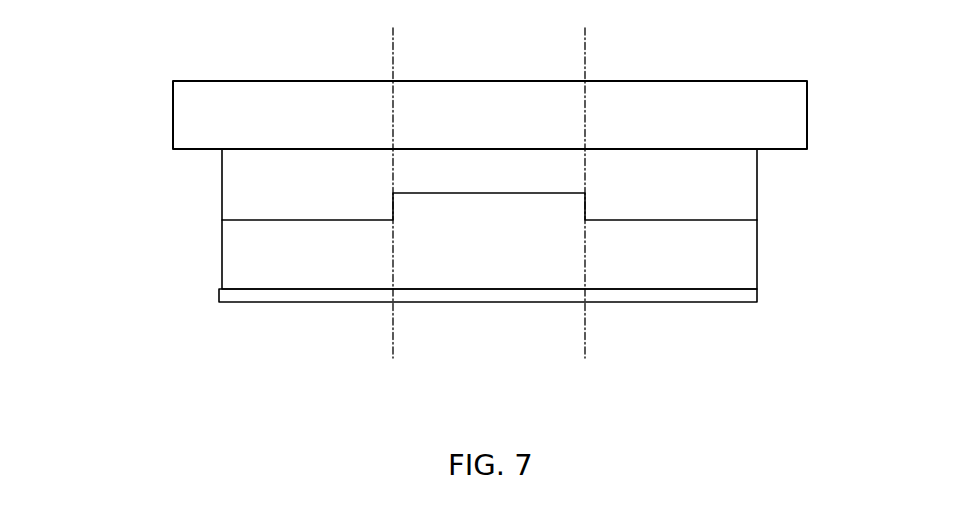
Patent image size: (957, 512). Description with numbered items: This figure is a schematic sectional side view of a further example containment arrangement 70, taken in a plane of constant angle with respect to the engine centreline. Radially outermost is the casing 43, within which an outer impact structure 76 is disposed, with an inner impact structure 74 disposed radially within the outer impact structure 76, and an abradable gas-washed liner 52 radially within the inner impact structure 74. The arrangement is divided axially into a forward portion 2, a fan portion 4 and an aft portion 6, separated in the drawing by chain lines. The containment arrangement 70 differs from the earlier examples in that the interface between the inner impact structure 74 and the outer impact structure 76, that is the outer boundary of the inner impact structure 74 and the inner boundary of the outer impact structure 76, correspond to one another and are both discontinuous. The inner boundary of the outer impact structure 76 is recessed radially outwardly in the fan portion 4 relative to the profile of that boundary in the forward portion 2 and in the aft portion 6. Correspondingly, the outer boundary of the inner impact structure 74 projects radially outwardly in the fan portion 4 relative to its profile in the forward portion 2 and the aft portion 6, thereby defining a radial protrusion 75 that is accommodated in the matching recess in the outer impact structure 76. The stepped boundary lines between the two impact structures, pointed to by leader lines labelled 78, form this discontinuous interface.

The forward portion 2 is at (289, 69).
The fan portion 4 is at (446, 69).
The aft portion 6 is at (657, 69).
The casing 43 is at (801, 121).
The abradable gas-washed liner 52 is at (728, 299).
The containment arrangement 70 is at (130, 207).
The inner impact structure 74 is at (752, 262).
The radial protrusion 75 is at (538, 203).
The outer impact structure 76 is at (748, 183).
The interface 78 is at (460, 193).